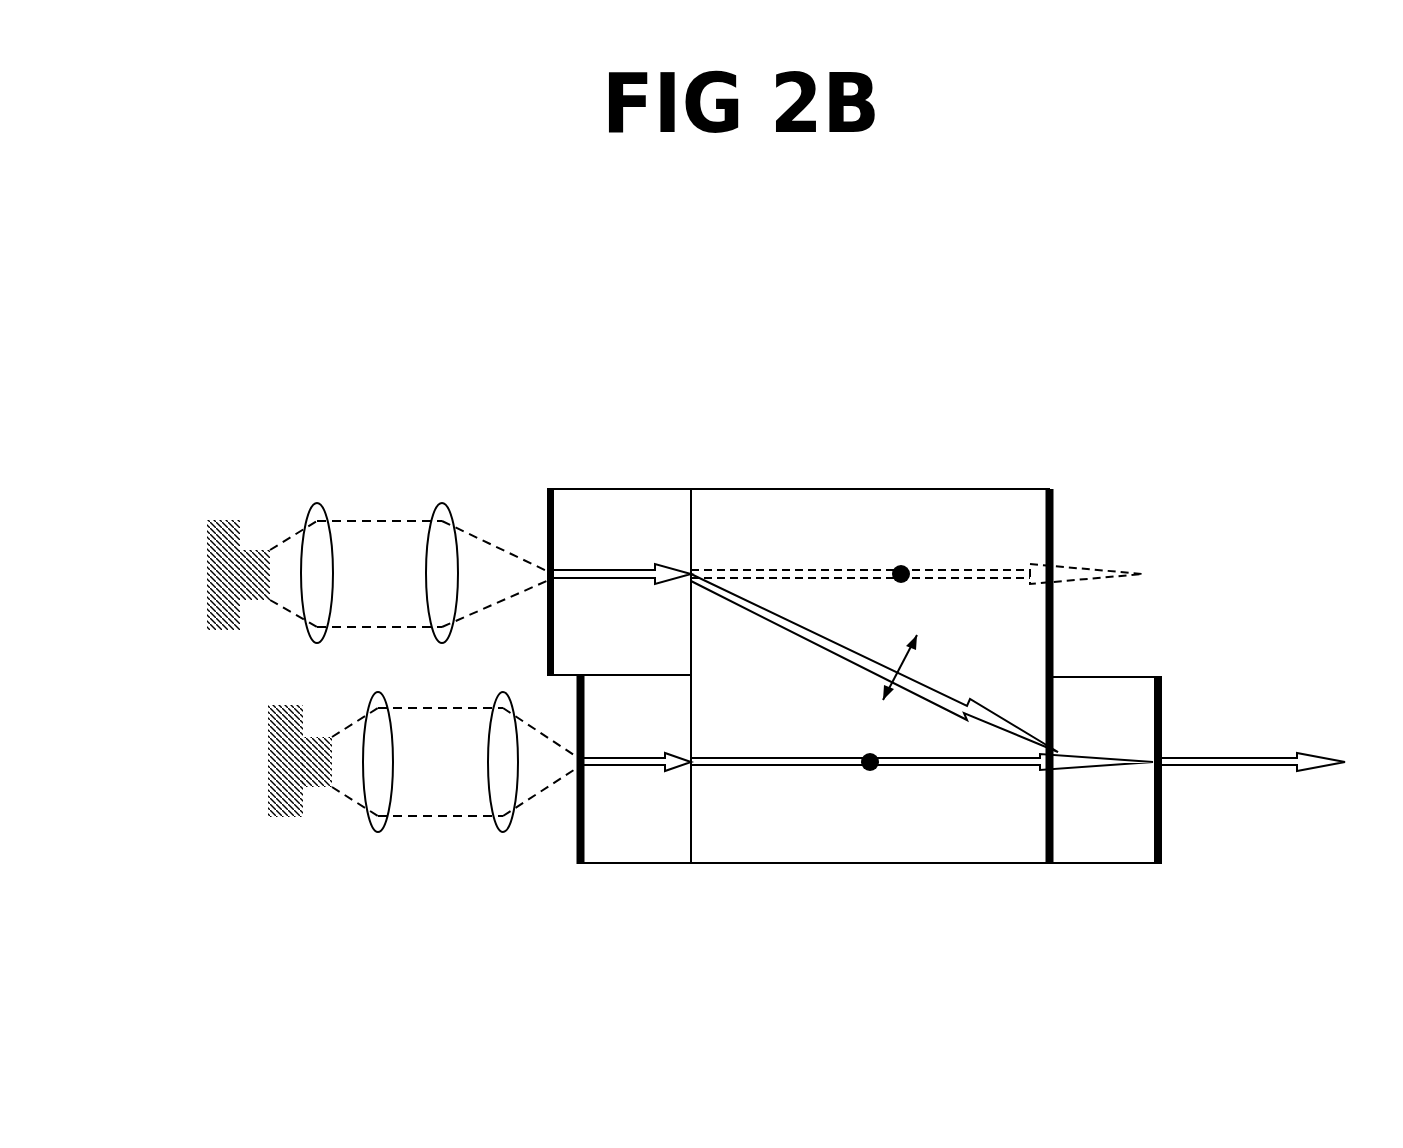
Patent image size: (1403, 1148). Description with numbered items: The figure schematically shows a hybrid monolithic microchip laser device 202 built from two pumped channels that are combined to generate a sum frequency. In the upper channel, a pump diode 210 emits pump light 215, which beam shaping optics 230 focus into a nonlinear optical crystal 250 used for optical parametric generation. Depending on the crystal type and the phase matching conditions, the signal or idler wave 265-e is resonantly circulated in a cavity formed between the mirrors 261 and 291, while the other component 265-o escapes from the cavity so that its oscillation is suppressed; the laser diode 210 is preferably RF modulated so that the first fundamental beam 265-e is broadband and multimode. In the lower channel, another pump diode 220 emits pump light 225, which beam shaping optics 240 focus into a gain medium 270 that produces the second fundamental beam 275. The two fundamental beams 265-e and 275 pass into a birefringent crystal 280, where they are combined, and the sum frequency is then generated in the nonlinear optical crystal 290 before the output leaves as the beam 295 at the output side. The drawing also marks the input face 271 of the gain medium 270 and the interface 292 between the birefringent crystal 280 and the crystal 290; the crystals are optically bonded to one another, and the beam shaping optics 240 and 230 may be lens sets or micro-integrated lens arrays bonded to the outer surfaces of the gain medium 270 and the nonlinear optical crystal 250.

The hybrid laser device 202 is at (854, 597).
The pump diode 210 is at (226, 536).
The pump diode 220 is at (288, 803).
The beam shaping optics 230 is at (379, 552).
The beam shaping optics 240 is at (440, 788).
The pump light 215 is at (480, 574).
The pump light 225 is at (511, 762).
The nonlinear optical crystal 250 is at (621, 582).
The mirror 261 is at (529, 552).
The gain medium 270 is at (637, 769).
The second input face 271 is at (593, 801).
The birefringent crystal 280 is at (870, 676).
The nonlinear optical crystal 290 is at (1103, 770).
The mirror 291 is at (1204, 773).
The interface between combiner and output block 292 is at (1059, 711).
The component 265-o is at (917, 546).
The first fundamental beam 265-e is at (874, 663).
The second fundamental beam 275 is at (922, 789).
The combined output beam 295 is at (1251, 732).